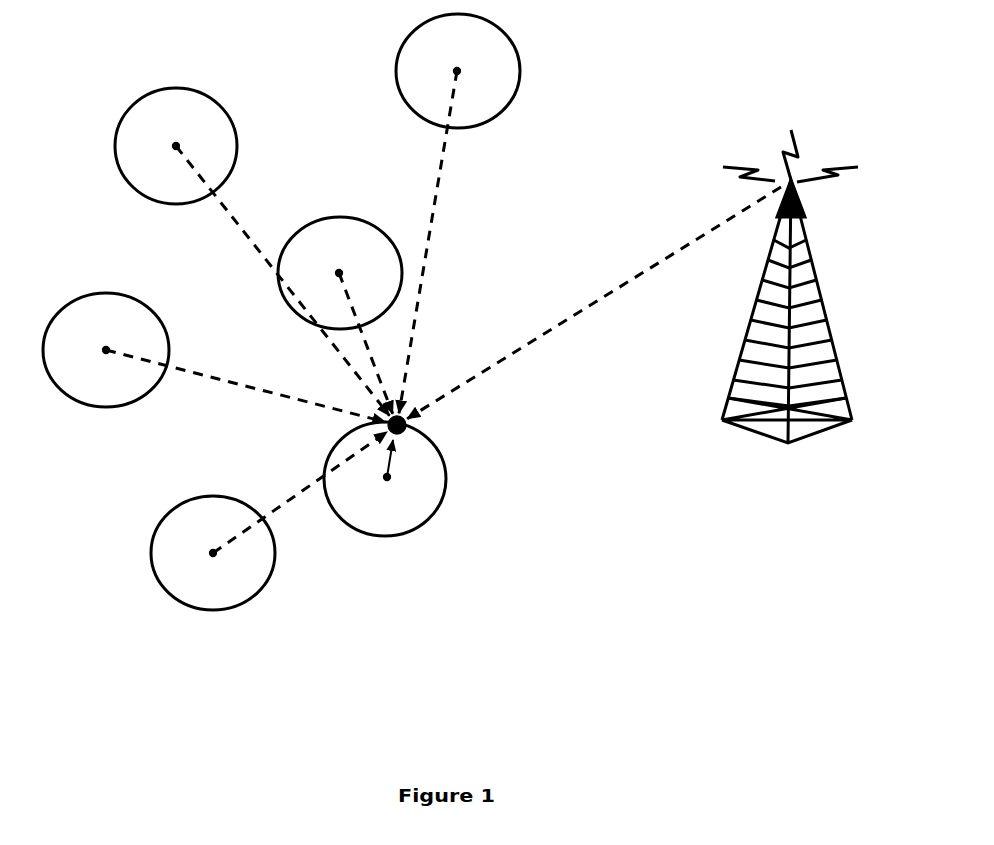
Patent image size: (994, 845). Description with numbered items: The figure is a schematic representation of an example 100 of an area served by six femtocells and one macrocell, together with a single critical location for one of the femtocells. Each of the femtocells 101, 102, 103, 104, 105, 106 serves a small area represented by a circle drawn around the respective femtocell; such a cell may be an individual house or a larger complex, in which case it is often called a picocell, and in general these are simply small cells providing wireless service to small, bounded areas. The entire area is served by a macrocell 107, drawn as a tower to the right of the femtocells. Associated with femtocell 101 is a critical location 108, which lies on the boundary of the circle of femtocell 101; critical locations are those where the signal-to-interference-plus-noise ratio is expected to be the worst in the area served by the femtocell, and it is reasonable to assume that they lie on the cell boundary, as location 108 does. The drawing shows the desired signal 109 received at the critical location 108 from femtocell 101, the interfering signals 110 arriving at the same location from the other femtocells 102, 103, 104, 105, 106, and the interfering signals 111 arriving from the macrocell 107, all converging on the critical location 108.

The example area 100 is at (702, 563).
The femtocell 101 is at (402, 490).
The femtocell 102 is at (190, 575).
The femtocell 103 is at (109, 373).
The femtocell 104 is at (162, 125).
The femtocell 105 is at (343, 257).
The femtocell 106 is at (493, 67).
The macrocell 107 is at (805, 483).
The critical location 108 is at (424, 427).
The signal 109 is at (380, 458).
The signals 110 is at (303, 393).
The signals 111 is at (612, 360).